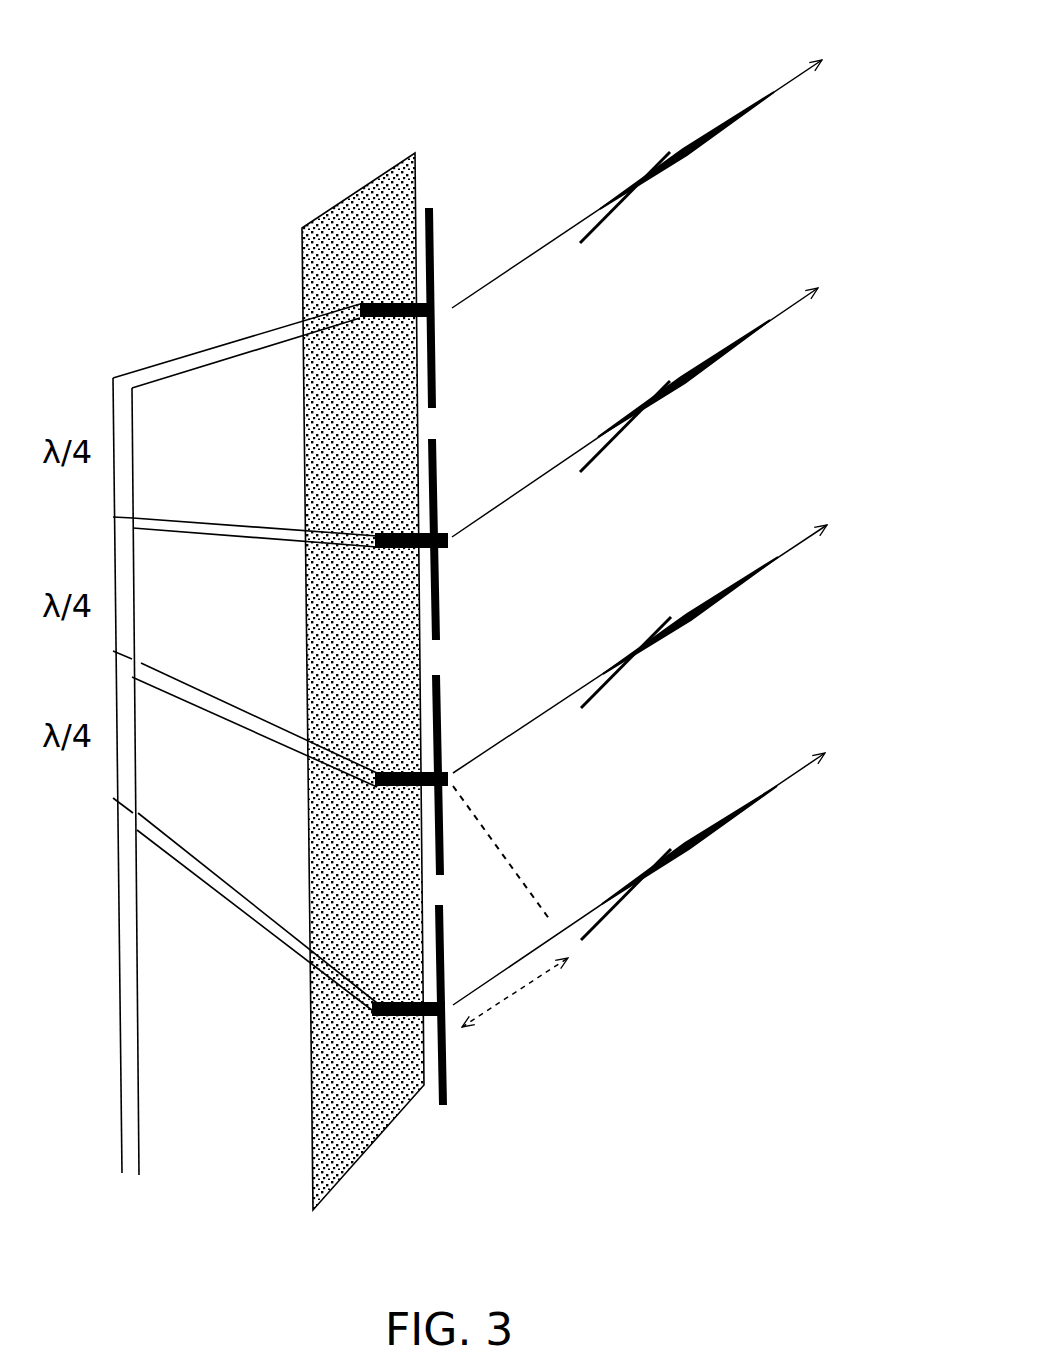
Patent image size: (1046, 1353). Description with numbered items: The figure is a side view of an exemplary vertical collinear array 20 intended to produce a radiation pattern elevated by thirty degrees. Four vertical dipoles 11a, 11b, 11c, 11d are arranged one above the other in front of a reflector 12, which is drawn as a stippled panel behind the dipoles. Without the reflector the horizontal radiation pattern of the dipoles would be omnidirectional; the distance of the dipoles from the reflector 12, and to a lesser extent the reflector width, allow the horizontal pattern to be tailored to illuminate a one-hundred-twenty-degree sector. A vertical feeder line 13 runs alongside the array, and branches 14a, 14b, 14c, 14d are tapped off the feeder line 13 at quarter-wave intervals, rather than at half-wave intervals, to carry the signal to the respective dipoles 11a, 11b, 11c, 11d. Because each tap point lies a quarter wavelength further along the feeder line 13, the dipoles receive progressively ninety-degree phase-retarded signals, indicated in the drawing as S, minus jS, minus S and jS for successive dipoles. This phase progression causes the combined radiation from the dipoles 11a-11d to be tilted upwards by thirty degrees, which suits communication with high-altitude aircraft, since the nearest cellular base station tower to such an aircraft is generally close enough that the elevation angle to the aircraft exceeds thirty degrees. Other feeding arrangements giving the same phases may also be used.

The vertical dipole 11a is at (442, 235).
The vertical dipole 11b is at (450, 453).
The vertical dipole 11c is at (450, 693).
The vertical dipole 11d is at (455, 1087).
The reflector 12 is at (367, 1150).
The feeder line 13 is at (148, 1113).
The feed branch 14a is at (188, 352).
The feed branch 14b is at (197, 520).
The feed branch 14c is at (188, 683).
The feed branch 14d is at (188, 847).
The vertical collinear array 20 is at (500, 100).